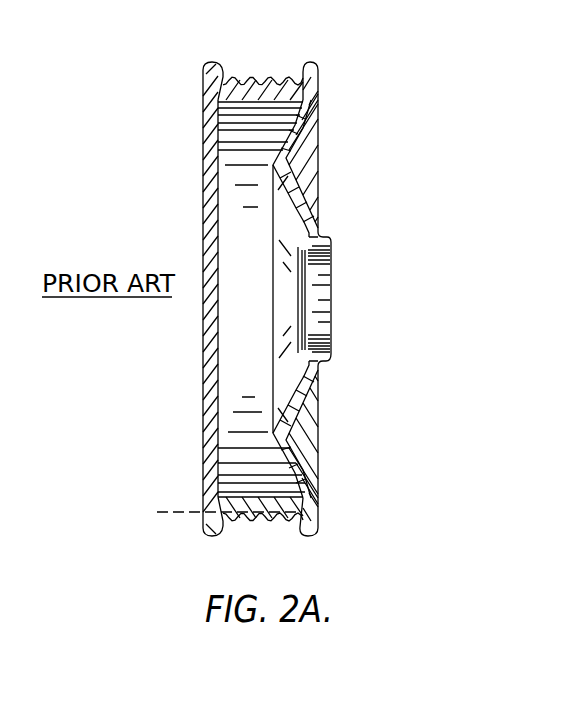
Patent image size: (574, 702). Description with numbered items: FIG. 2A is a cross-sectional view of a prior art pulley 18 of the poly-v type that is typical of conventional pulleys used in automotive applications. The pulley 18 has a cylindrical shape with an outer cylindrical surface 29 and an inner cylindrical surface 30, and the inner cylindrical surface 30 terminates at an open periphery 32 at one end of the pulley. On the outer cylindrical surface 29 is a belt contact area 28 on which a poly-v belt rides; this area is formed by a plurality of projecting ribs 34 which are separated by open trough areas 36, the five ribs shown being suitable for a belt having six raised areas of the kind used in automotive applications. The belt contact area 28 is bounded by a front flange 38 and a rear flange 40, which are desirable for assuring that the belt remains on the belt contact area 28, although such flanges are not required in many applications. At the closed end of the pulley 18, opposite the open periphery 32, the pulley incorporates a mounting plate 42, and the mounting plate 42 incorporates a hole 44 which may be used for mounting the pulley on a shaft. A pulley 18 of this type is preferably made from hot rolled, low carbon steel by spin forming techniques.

The pulley 18 is at (293, 408).
The belt contact area 28 is at (268, 535).
The outer cylindrical surface 29 is at (177, 513).
The inner cylindrical surface 30 is at (250, 495).
The open periphery 32 is at (195, 184).
The projecting ribs 34 is at (270, 80).
The open trough areas 36 is at (242, 78).
The front flange 38 is at (301, 73).
The rear flange 40 is at (222, 72).
The mounting plate 42 is at (288, 148).
The hole 44 is at (310, 250).